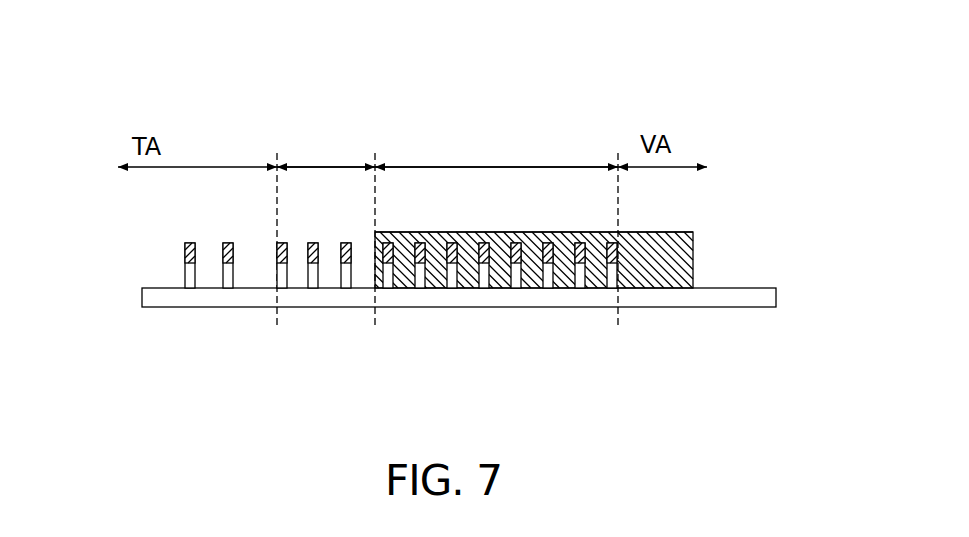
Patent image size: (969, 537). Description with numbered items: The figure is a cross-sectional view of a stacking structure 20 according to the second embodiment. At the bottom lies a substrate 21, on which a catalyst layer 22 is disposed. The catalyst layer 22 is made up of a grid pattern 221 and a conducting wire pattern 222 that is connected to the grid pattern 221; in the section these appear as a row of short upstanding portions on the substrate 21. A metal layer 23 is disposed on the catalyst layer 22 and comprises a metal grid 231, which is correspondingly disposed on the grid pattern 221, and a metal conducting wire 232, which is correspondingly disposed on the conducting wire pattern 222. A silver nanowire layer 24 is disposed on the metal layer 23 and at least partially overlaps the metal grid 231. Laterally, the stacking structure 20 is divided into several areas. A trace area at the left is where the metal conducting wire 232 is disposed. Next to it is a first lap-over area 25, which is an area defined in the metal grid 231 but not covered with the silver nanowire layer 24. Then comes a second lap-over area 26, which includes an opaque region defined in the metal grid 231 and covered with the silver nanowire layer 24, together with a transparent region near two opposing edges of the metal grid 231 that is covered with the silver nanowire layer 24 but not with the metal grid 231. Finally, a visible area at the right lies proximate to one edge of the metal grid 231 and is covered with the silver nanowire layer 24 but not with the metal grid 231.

The stacking structure 20 is at (113, 97).
The substrate 21 is at (740, 300).
The catalyst layer 22 is at (500, 304).
The grid pattern 221 is at (282, 280).
The conducting wire pattern 222 is at (190, 280).
The metal layer 23 is at (618, 252).
The metal grid 231 is at (343, 243).
The metal conducting wire 232 is at (227, 243).
The silver nanowire layer 24 is at (693, 232).
The first lap-over area 25 is at (326, 148).
The second lap-over area 26 is at (496, 147).